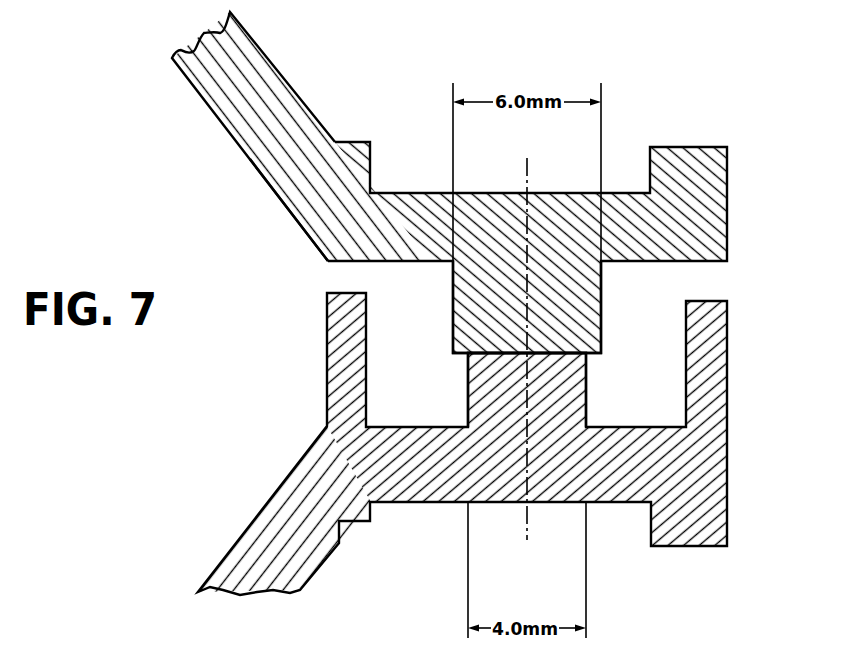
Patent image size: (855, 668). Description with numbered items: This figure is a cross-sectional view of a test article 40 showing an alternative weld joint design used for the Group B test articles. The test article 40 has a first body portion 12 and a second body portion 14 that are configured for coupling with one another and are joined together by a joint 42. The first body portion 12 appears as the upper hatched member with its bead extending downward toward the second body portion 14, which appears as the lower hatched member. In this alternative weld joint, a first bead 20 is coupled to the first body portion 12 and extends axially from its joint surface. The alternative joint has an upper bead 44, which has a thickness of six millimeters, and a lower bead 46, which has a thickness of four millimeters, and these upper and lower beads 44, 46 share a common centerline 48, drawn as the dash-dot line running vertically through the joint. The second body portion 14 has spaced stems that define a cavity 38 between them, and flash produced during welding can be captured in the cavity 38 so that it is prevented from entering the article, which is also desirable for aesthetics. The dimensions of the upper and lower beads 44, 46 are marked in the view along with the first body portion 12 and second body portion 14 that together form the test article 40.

The first body portion 12 is at (293, 67).
The second body portion 14 is at (462, 452).
The first bead 20 is at (585, 283).
The cavity 38 is at (285, 272).
The test article 40 is at (561, 200).
The joint 42 is at (423, 322).
The upper bead 44 is at (484, 306).
The lower bead 46 is at (488, 395).
The common centerline 48 is at (522, 179).